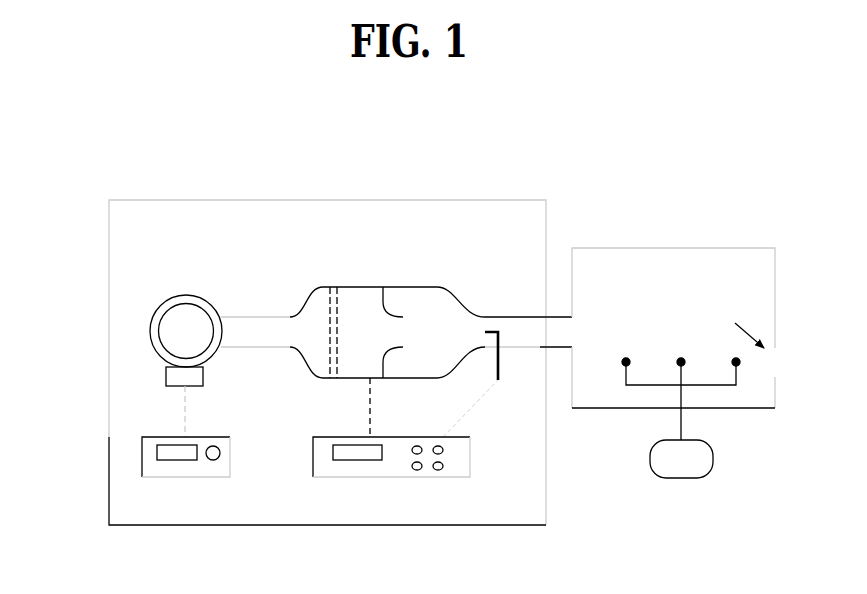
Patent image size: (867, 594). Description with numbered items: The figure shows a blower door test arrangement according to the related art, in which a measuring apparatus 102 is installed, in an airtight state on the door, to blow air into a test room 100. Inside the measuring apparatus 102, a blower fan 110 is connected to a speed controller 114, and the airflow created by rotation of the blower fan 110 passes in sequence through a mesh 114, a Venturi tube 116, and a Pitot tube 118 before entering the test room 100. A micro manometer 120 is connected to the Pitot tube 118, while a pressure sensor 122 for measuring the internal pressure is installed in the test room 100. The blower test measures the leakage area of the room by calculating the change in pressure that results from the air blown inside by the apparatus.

The test room 100 is at (675, 248).
The measuring apparatus 102 is at (328, 200).
The blower fan 110 is at (361, 344).
The speed controller 114 is at (142, 457).
The Venturi tube 116 is at (388, 333).
The Pitot tube 118 is at (485, 330).
The micro manometer 120 is at (470, 457).
The pressure sensor 122 is at (680, 478).